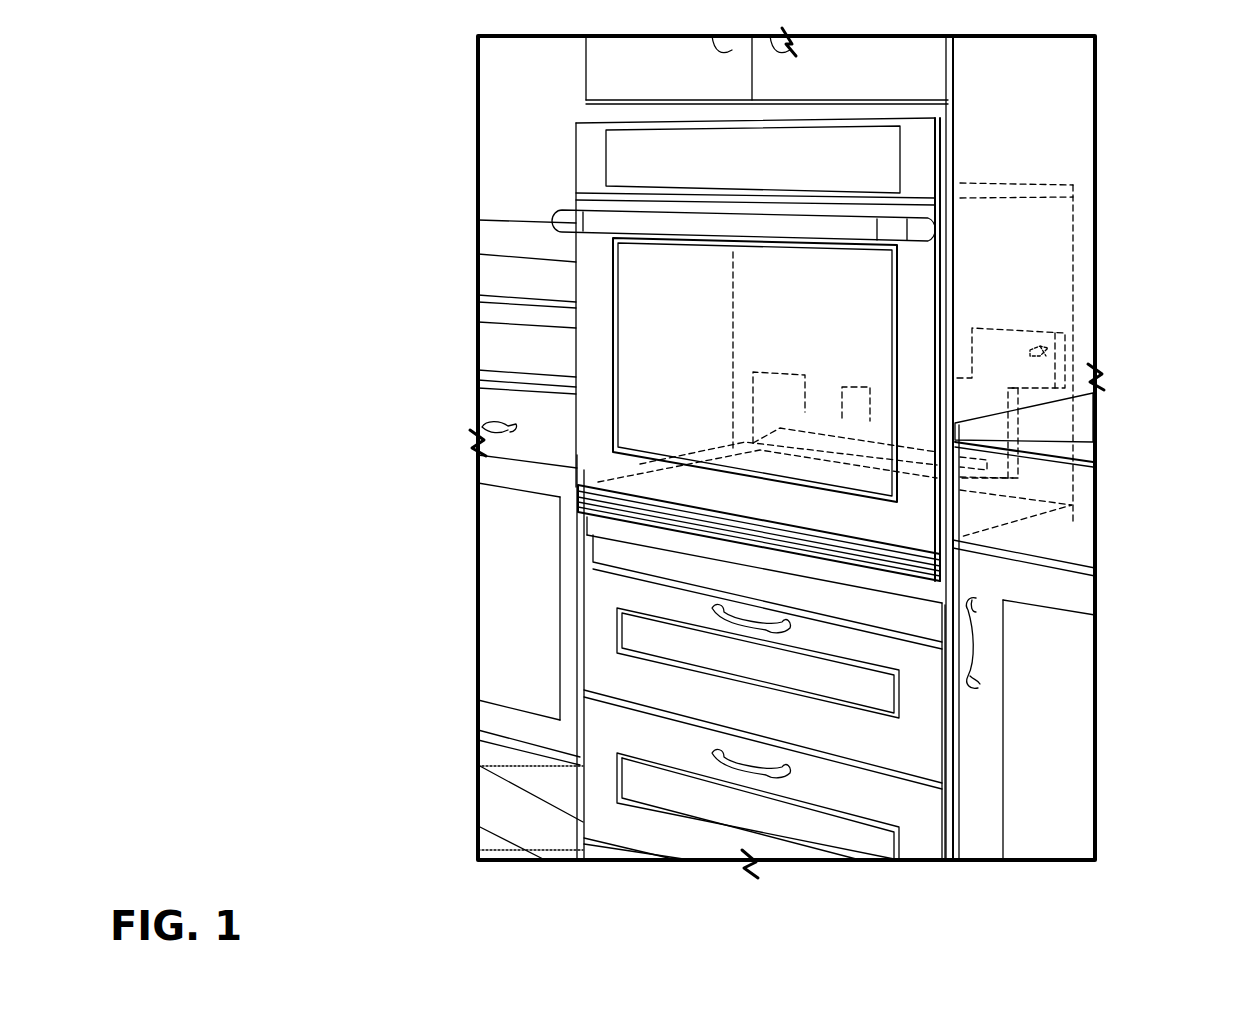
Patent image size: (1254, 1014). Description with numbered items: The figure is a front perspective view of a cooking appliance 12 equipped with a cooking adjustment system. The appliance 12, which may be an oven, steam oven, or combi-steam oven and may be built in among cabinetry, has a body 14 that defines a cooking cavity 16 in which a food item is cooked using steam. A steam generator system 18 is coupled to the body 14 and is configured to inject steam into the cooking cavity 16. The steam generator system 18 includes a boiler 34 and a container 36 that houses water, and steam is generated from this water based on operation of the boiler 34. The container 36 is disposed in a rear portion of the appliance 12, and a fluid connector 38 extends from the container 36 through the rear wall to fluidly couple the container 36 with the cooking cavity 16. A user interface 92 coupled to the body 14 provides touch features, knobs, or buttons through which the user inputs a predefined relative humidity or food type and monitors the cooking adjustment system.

The cooking appliance 12 is at (985, 146).
The body 14 is at (580, 165).
The cooking cavity 16 is at (648, 337).
The steam generator system 18 is at (1037, 326).
The boiler 34 is at (598, 517).
The container 36 is at (1040, 445).
The fluid connector 38 is at (1048, 352).
The user interface 92 is at (648, 143).